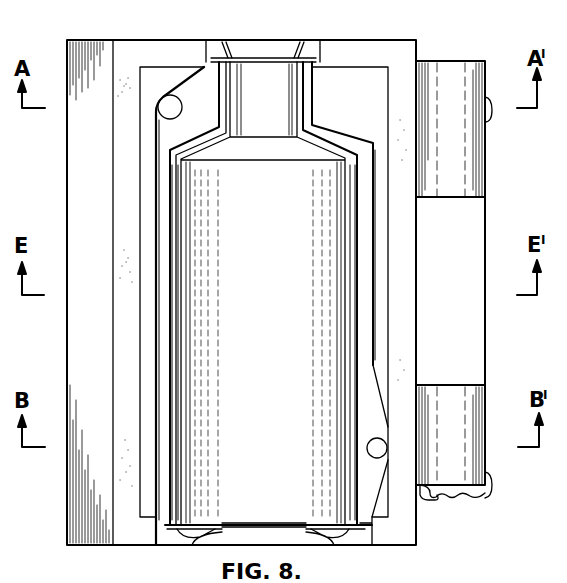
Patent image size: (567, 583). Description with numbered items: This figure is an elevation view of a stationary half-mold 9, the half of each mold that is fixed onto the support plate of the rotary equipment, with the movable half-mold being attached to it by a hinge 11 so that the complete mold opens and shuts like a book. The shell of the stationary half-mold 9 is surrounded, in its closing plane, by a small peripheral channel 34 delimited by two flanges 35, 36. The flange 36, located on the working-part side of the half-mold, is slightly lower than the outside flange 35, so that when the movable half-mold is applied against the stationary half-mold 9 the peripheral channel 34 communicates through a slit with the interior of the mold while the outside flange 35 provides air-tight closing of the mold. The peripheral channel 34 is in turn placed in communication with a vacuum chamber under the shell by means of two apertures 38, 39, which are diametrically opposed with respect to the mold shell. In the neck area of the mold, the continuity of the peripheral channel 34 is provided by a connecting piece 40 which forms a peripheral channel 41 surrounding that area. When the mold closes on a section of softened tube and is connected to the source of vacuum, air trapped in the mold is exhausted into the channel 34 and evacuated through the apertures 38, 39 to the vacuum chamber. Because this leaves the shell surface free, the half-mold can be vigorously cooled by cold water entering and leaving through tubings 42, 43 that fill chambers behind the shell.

The stationary half-mold 9 is at (370, 45).
The hinge 11 is at (470, 181).
The peripheral channel 34 is at (165, 215).
The outside flange 35 is at (152, 391).
The flange 36 is at (177, 327).
The aperture 38 is at (177, 104).
The aperture 39 is at (384, 445).
The connecting piece 40 is at (311, 47).
The peripheral channel 41 is at (218, 47).
The tubing 42 is at (490, 108).
The tubing 43 is at (493, 478).